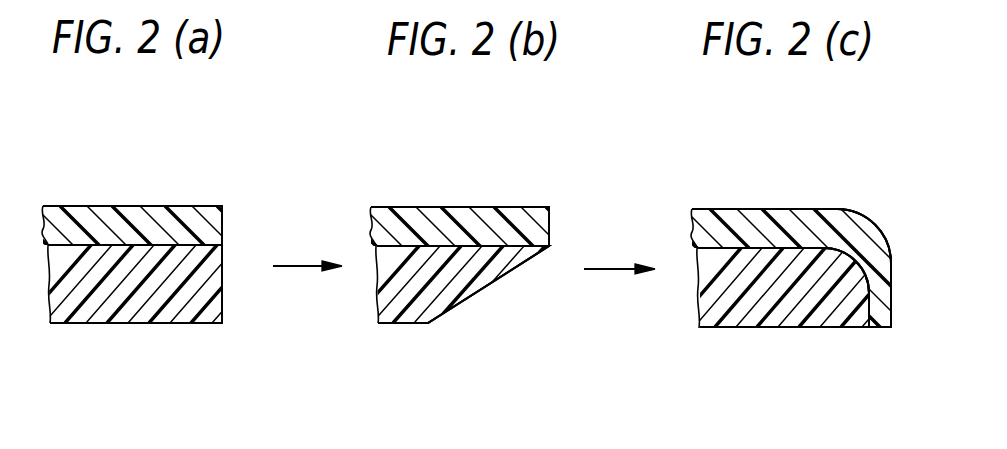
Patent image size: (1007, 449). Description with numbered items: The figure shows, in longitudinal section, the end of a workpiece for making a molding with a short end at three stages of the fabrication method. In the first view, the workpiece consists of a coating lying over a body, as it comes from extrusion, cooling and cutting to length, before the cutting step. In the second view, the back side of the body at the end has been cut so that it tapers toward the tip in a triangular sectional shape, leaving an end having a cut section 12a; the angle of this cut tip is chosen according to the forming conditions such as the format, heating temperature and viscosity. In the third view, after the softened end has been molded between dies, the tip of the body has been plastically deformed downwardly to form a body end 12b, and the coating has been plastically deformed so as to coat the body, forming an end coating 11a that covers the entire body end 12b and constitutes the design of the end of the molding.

The end coating 11a is at (887, 236).
The cut section 12a is at (480, 289).
The body end 12b is at (857, 320).